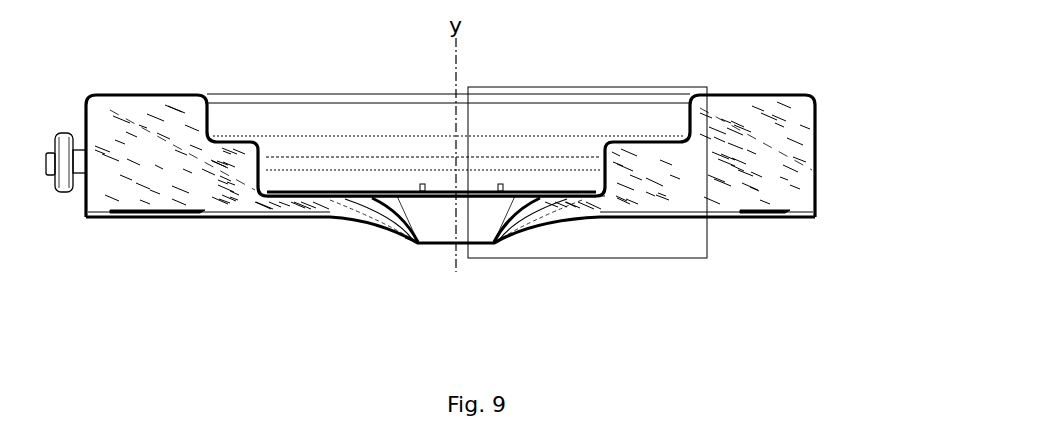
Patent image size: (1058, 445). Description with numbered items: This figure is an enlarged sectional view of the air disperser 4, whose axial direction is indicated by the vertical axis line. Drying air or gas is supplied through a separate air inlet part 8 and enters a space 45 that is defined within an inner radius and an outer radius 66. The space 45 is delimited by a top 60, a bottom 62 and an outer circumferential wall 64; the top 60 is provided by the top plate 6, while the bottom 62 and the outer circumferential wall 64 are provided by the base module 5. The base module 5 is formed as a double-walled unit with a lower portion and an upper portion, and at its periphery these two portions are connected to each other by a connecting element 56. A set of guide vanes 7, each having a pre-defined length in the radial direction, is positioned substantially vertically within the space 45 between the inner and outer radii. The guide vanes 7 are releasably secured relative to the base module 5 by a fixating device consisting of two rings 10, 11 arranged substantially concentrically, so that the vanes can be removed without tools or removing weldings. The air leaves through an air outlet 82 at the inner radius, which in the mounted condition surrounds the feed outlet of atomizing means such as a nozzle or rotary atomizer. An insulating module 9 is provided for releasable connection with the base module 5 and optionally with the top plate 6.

The air disperser 4 is at (122, 80).
The base module 5 is at (166, 234).
The top plate 6 is at (292, 143).
The guide vanes 7 is at (297, 170).
The air inlet part 8 is at (587, 167).
The insulating module 9 is at (240, 118).
The ring of fixating device 10 is at (353, 197).
The ring of fixating device 11 is at (362, 200).
The space 45 is at (640, 198).
The connecting element 56 is at (84, 214).
The top 60 is at (630, 140).
The bottom 62 is at (487, 244).
The outer circumferential wall 64 is at (645, 195).
The outer radius 66 is at (640, 148).
The air outlet 82 is at (424, 250).